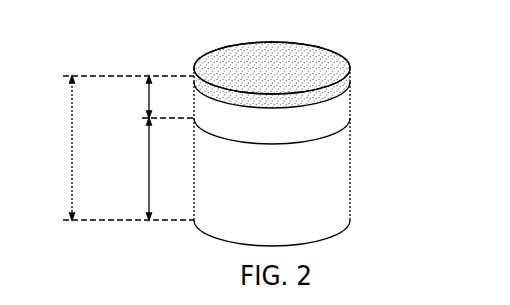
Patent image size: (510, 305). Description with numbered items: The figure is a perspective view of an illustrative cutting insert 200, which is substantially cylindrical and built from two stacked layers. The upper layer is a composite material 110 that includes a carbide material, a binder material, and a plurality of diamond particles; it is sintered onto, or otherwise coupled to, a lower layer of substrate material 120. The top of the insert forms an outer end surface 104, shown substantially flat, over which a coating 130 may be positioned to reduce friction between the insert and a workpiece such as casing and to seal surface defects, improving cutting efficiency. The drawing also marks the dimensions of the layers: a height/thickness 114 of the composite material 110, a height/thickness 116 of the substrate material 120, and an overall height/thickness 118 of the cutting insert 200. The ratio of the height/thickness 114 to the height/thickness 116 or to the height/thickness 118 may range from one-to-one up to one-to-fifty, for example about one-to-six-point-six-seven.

The cutting insert 200 is at (294, 127).
The outer end surface 104 is at (228, 58).
The coating 130 is at (204, 57).
The composite material 110 is at (292, 76).
The substrate material 120 is at (350, 219).
The height/thickness of the composite material 114 is at (147, 92).
The height/thickness of the substrate material 116 is at (151, 169).
The height/thickness of the cutting insert 118 is at (74, 148).